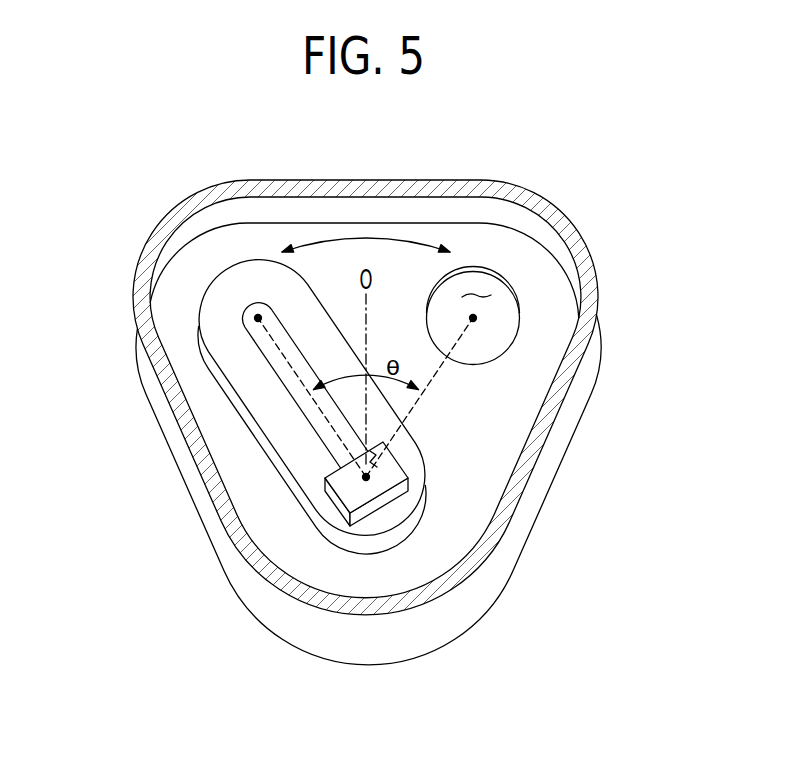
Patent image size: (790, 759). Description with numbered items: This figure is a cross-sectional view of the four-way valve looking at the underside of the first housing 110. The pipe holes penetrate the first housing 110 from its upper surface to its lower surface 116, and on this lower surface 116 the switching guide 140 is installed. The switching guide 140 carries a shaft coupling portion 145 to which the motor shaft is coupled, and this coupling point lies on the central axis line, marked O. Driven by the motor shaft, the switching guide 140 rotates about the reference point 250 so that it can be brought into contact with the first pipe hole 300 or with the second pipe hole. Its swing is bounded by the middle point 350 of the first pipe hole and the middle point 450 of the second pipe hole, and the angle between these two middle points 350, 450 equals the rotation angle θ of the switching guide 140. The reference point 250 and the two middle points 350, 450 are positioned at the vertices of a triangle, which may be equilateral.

The first housing 110 is at (550, 453).
The lower surface of the first housing 116 is at (465, 483).
The switching guide 140 is at (221, 388).
The shaft coupling portion 145 is at (347, 493).
The reference point 250 is at (366, 477).
The first pipe hole 300 is at (477, 292).
The middle point of the first pipe hole 350 is at (473, 318).
The middle point of the second pipe hole 450 is at (258, 318).